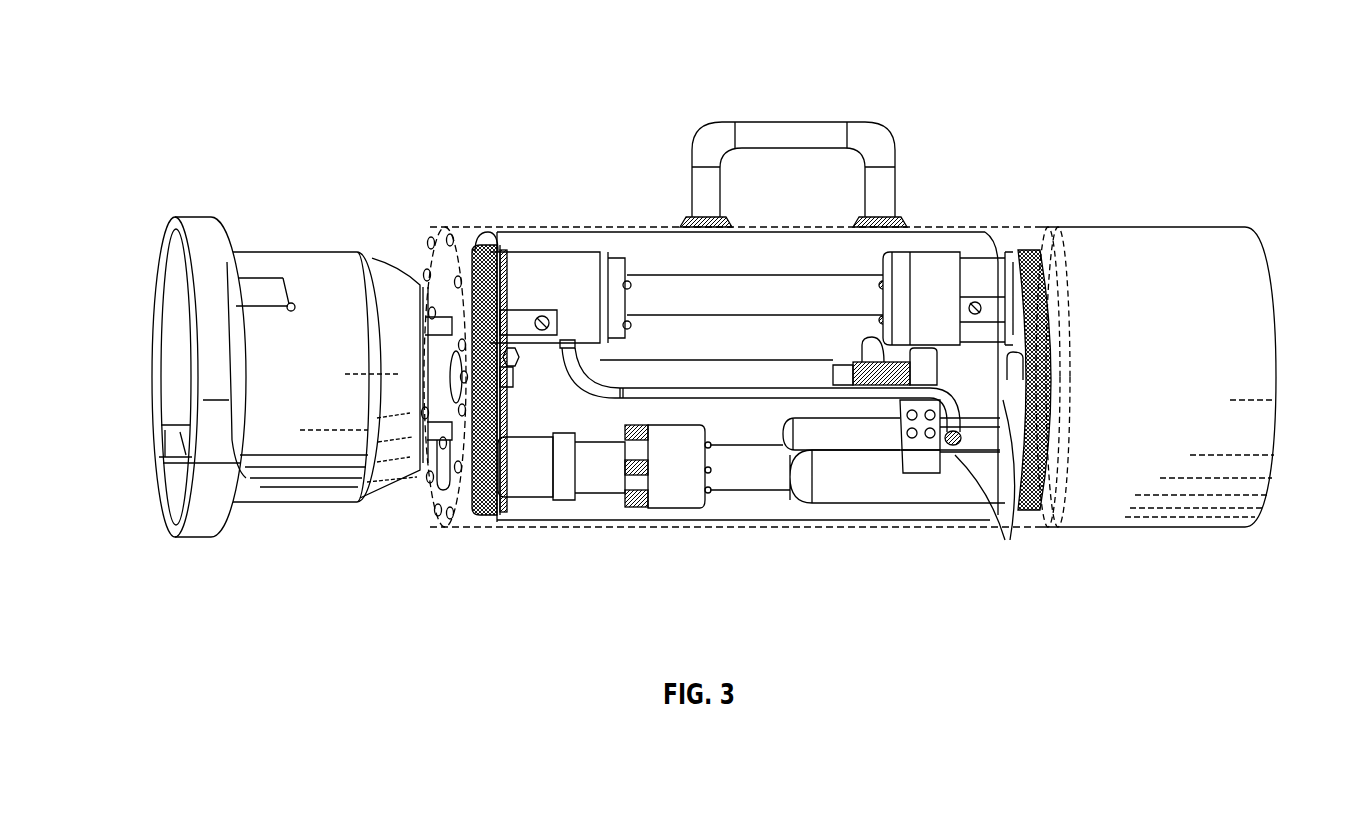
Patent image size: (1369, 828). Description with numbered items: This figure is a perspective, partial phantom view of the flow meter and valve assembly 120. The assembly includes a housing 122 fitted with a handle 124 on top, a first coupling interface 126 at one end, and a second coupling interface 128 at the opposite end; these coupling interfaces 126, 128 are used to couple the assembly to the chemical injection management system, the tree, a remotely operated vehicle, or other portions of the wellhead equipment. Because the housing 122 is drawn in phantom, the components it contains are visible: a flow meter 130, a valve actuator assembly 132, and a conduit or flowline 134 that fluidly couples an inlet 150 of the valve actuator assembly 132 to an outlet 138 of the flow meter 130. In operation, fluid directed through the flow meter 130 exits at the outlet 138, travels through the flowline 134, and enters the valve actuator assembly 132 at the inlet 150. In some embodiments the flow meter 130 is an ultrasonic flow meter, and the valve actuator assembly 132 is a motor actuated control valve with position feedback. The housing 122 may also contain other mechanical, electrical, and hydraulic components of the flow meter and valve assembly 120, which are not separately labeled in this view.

The flow meter and valve assembly 120 is at (1150, 92).
The housing 122 is at (556, 227).
The handle 124 is at (815, 122).
The first coupling interface 126 is at (1272, 250).
The second coupling interface 128 is at (150, 292).
The flow meter 130 is at (807, 275).
The valve actuator assembly 132 is at (850, 488).
The conduit or flowline 134 is at (780, 400).
The outlet 138 is at (565, 335).
The inlet 150 is at (960, 442).